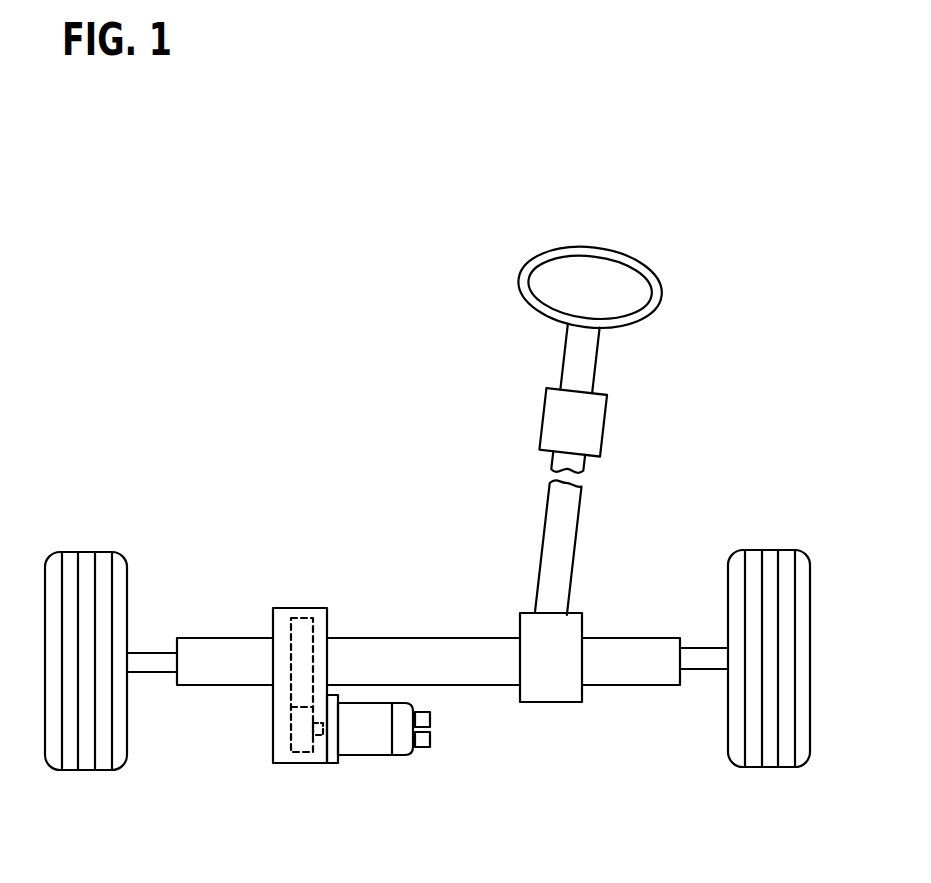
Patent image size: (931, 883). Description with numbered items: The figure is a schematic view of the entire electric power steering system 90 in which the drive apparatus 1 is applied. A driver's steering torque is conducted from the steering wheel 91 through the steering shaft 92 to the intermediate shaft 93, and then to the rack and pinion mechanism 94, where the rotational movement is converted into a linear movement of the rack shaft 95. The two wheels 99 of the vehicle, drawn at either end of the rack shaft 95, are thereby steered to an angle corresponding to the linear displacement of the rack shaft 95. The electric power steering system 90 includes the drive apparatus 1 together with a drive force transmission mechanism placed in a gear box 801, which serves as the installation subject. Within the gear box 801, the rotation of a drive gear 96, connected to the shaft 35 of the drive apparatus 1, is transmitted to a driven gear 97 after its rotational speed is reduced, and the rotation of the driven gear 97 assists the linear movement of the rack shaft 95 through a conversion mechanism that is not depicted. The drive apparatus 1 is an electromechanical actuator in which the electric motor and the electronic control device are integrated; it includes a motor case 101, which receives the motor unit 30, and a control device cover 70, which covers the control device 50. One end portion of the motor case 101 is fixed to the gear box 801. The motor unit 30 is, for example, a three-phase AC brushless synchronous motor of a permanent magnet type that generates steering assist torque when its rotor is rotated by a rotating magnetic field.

The drive apparatus 1 is at (438, 735).
The motor unit 30 is at (367, 733).
The shaft 35 is at (322, 737).
The control device 50 is at (422, 747).
The control device cover 70 is at (402, 747).
The electric power steering system 90 is at (302, 453).
The steering wheel 91 is at (600, 247).
The steering shaft 92 is at (565, 373).
The intermediate shaft 93 is at (543, 542).
The rack and pinion mechanism 94 is at (575, 613).
The rack shaft 95 is at (400, 638).
The drive gear 96 is at (292, 728).
The driven gear 97 is at (290, 637).
The wheels 99 is at (90, 552).
The motor case 101 is at (350, 747).
The gear box 801 is at (283, 750).